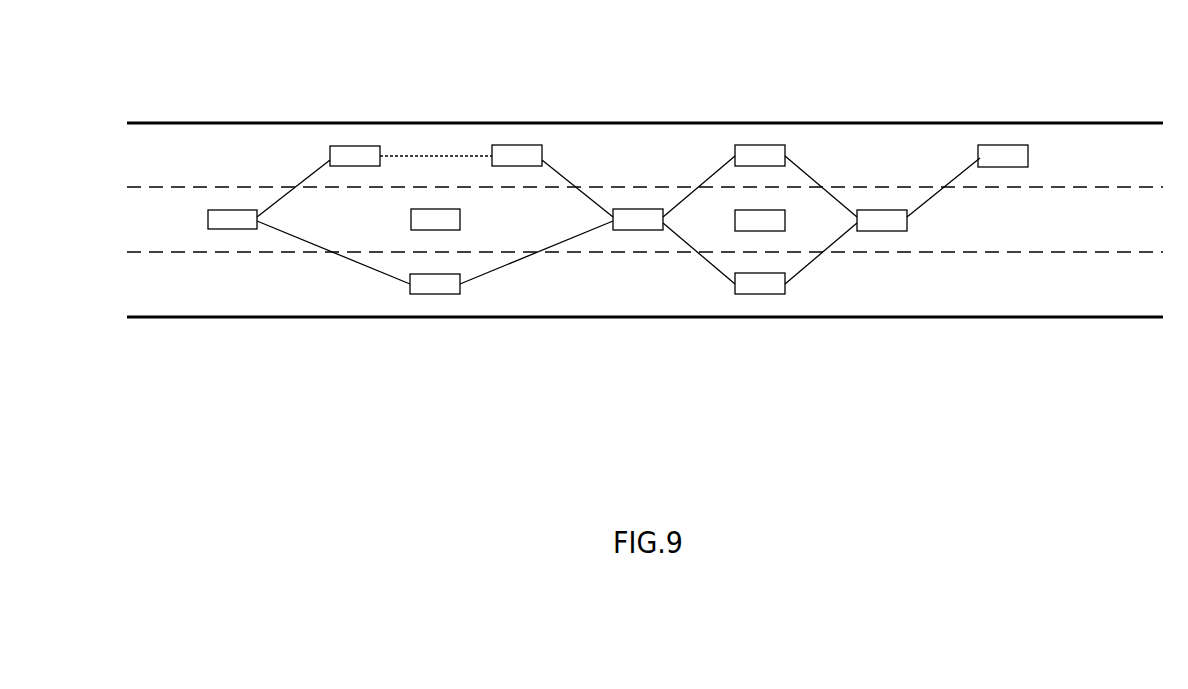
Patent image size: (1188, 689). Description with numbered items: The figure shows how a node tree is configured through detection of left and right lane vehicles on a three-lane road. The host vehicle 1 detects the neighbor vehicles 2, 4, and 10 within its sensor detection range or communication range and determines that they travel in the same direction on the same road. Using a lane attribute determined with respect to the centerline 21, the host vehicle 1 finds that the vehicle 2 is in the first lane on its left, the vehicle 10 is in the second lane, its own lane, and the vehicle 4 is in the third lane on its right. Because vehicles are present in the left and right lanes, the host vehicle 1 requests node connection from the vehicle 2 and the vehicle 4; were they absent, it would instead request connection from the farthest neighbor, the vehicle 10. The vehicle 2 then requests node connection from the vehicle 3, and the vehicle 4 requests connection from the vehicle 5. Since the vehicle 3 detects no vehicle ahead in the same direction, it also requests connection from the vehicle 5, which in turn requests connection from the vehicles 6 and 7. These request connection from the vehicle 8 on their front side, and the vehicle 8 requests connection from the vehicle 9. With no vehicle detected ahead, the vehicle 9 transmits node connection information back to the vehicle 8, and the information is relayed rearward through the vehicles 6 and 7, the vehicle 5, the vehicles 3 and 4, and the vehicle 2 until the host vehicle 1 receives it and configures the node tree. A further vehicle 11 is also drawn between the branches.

The host vehicle 1 is at (232, 234).
The vehicle 2 is at (355, 156).
The vehicle 3 is at (517, 155).
The vehicle 4 is at (435, 284).
The vehicle 5 is at (638, 219).
The vehicle 6 is at (760, 155).
The vehicle 7 is at (760, 283).
The vehicle 8 is at (882, 220).
The vehicle 9 is at (1003, 156).
The vehicle 10 is at (235, 110).
The vehicle 11 is at (760, 220).
The centerline 21 is at (647, 122).